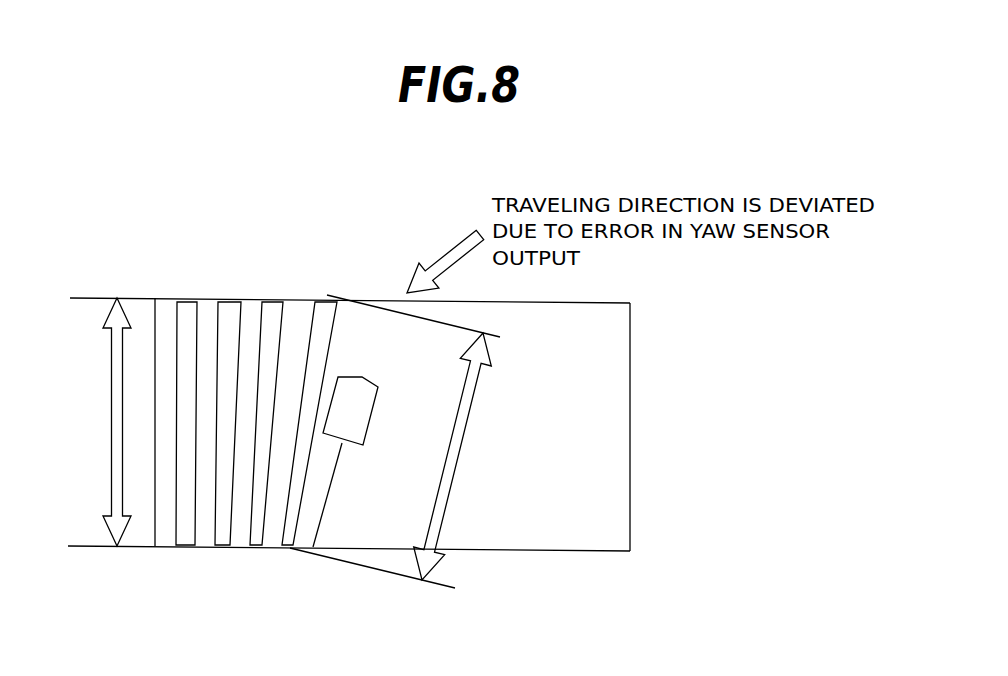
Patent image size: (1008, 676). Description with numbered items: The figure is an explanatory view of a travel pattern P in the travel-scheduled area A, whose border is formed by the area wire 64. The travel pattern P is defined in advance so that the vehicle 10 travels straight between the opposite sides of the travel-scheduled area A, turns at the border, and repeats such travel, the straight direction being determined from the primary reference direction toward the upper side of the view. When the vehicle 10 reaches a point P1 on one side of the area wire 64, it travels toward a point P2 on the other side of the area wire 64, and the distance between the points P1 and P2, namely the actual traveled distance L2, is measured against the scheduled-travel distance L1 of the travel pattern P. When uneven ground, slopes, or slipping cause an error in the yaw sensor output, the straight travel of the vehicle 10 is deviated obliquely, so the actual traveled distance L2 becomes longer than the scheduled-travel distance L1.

The vehicle 10 is at (364, 419).
The area wire 64 is at (590, 302).
The travel-scheduled area A is at (571, 471).
The travel pattern P is at (132, 272).
The point P1 is at (157, 300).
The point P2 is at (155, 548).
The scheduled-travel distance L1 is at (103, 422).
The actual traveled distance L2 is at (395, 441).